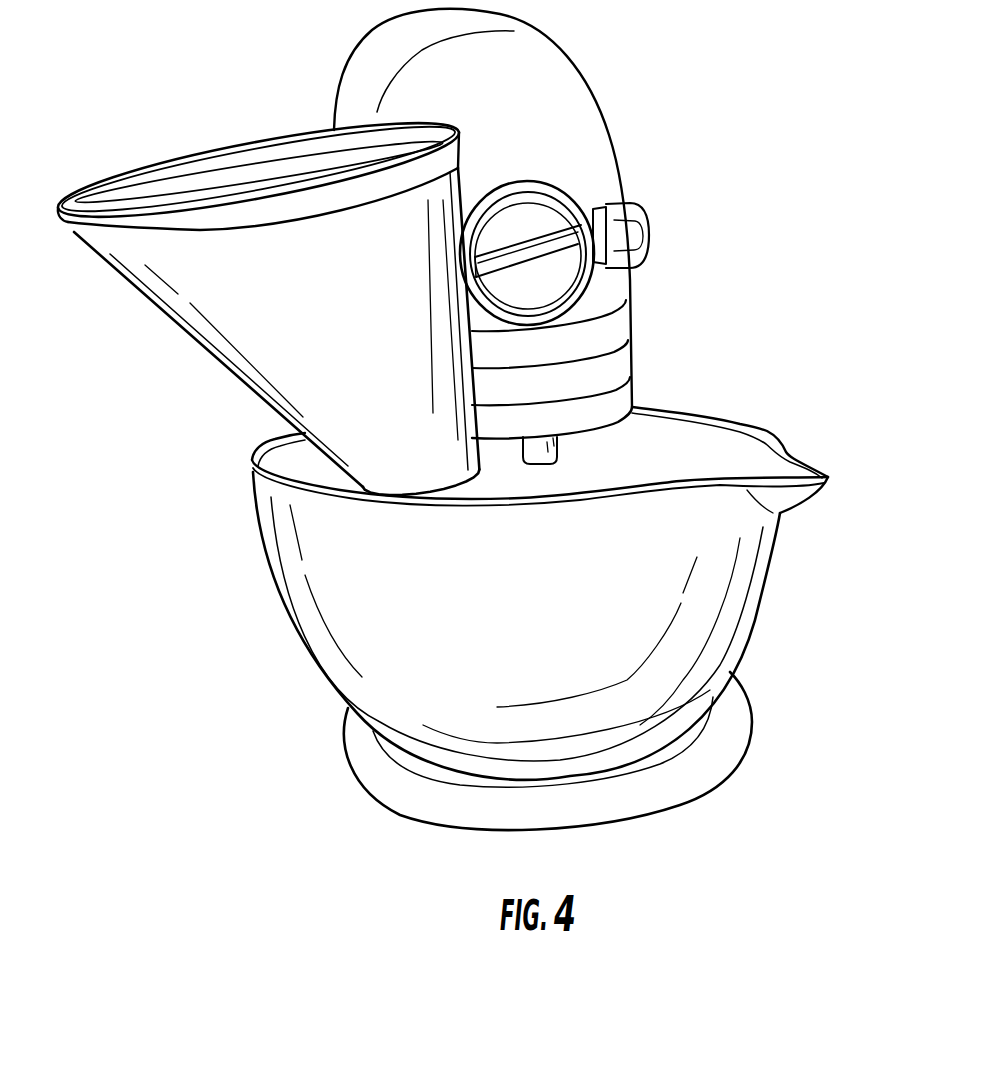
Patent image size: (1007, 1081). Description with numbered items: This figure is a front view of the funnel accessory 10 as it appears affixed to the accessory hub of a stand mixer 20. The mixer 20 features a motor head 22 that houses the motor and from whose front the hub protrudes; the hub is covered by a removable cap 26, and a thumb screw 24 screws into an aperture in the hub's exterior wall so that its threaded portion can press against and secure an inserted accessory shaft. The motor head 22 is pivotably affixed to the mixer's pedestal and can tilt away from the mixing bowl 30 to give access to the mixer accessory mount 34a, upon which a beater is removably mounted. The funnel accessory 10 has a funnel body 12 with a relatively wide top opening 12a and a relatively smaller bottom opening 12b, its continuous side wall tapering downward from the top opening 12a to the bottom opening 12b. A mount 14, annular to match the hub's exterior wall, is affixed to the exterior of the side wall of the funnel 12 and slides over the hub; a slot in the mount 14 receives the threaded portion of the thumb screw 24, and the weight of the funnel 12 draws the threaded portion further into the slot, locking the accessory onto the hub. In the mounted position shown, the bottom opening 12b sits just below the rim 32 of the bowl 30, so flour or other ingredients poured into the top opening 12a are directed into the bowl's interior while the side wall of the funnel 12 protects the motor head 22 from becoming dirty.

The funnel accessory 10 is at (155, 385).
The funnel body 12 is at (313, 362).
The top opening 12a is at (217, 160).
The bottom opening 12b is at (460, 553).
The mount 14 is at (523, 187).
The mixer 20 is at (677, 148).
The motor head 22 is at (478, 62).
The thumb screw 24 is at (647, 232).
The removable cap 26 is at (558, 278).
The mixing bowl 30 is at (738, 614).
The rim 32 is at (575, 490).
The mixer accessory mount 34a is at (543, 464).